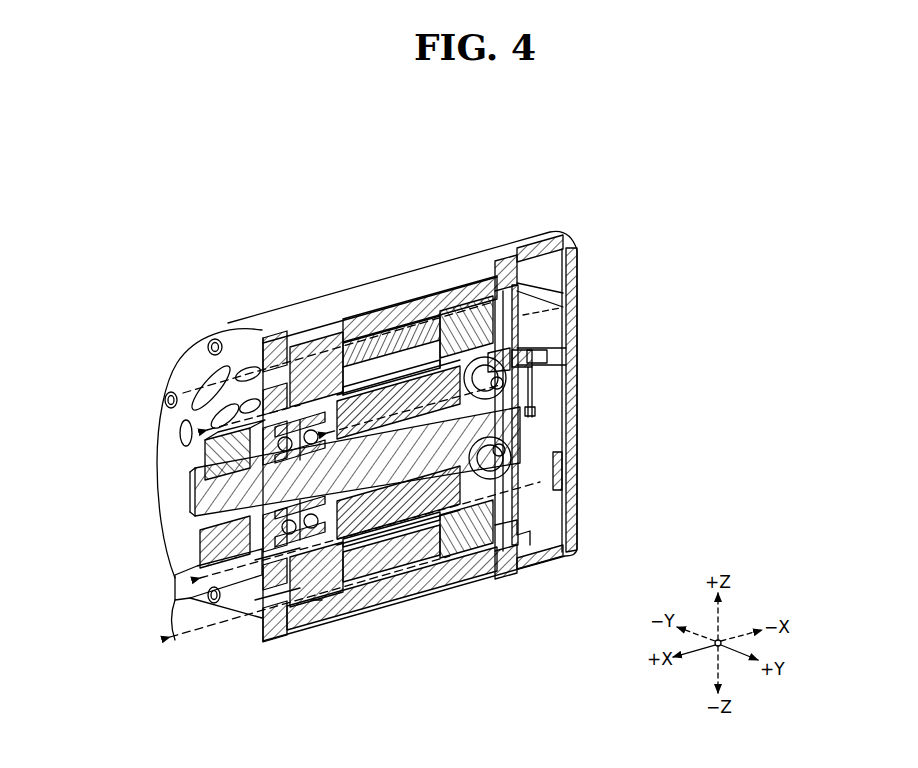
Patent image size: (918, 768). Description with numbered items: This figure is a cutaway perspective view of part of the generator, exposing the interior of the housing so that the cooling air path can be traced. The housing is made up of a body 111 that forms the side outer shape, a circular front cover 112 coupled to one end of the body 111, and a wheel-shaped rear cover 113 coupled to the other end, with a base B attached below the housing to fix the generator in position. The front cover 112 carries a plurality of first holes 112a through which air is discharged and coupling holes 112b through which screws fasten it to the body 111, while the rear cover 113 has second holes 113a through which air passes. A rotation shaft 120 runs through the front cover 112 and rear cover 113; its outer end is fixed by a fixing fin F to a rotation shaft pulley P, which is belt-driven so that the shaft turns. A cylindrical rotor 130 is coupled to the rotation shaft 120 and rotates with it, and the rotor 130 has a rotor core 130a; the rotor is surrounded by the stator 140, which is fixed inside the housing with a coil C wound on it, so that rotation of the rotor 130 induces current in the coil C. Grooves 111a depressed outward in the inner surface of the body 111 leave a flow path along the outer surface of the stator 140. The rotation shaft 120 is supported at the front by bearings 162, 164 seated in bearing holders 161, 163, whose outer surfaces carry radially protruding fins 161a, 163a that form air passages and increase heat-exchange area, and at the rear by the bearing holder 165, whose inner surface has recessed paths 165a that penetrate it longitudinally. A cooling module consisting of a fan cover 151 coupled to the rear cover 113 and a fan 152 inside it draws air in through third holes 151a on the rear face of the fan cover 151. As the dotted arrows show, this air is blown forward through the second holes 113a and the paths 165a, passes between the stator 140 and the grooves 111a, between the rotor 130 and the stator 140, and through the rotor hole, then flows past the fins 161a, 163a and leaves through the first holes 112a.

The body 111 is at (337, 312).
The grooves 111a is at (393, 316).
The front cover 112 is at (257, 335).
The first holes 112a is at (200, 390).
The coupling holes 112b is at (203, 343).
The rear cover 113 is at (483, 258).
The second holes 113a is at (515, 520).
The rotation shaft 120 is at (215, 447).
The rotor 130 is at (433, 598).
The rotor core 130a is at (430, 598).
The stator 140 is at (400, 585).
The fan cover 151 is at (537, 245).
The third holes 151a is at (563, 467).
The fan 152 is at (535, 350).
The bearing holder 161 is at (288, 396).
The fins 161a is at (262, 383).
The bearing 162 is at (197, 600).
The bearing holder 163 is at (305, 600).
The fins 163a is at (272, 612).
The bearing 164 is at (243, 588).
The bearing holder 165 is at (527, 332).
The paths 165a is at (513, 355).
The fixing fin F is at (190, 493).
The rotation shaft pulley P is at (197, 583).
The base B is at (193, 597).
The coil C is at (317, 605).